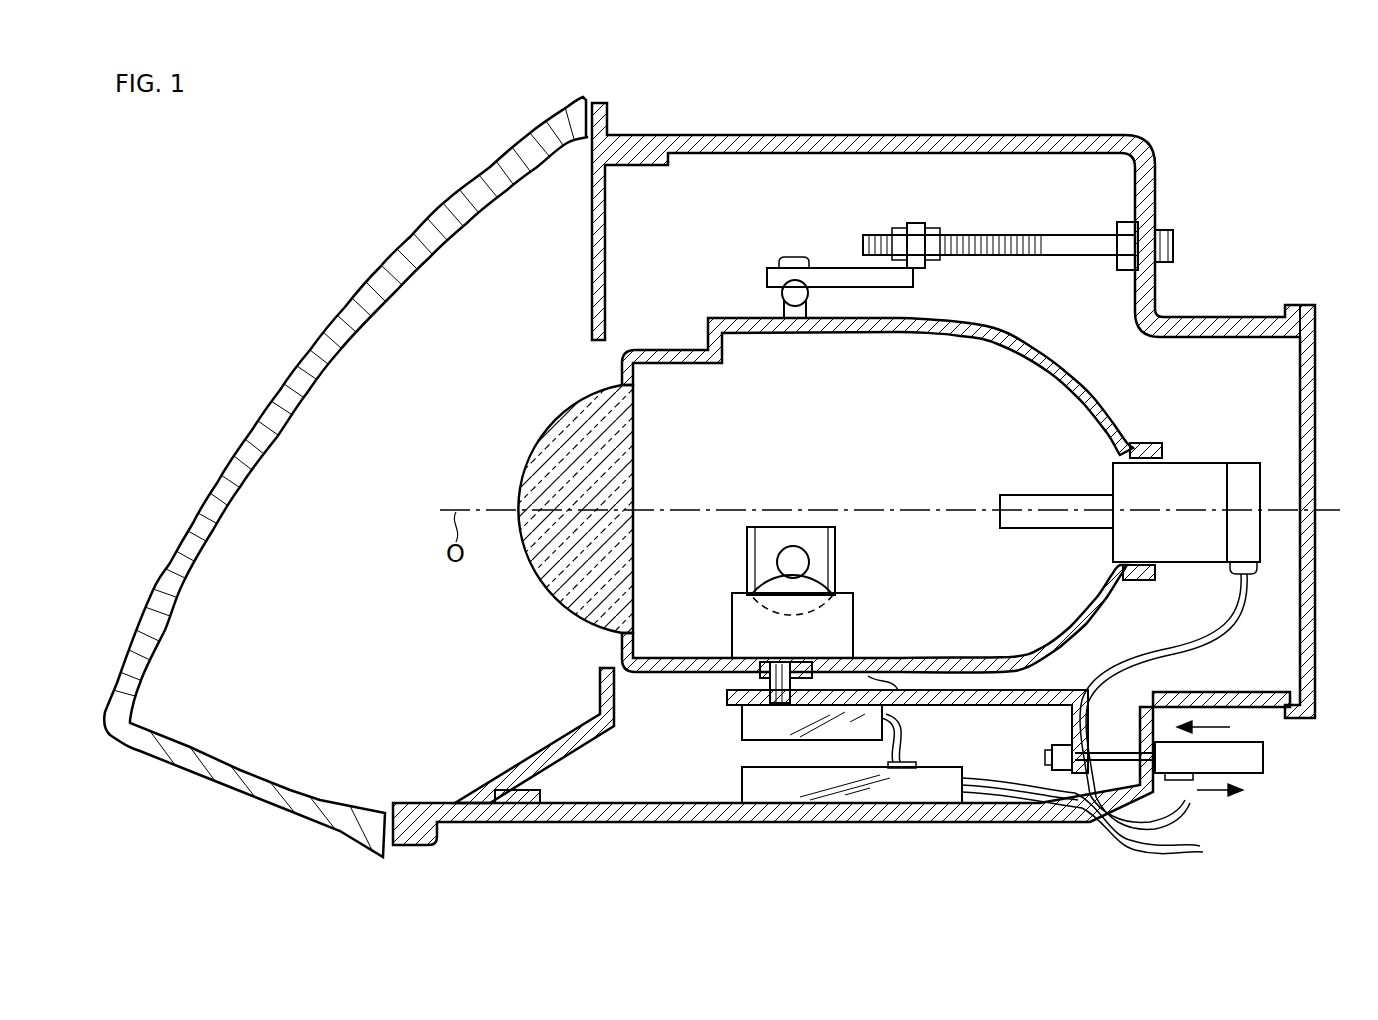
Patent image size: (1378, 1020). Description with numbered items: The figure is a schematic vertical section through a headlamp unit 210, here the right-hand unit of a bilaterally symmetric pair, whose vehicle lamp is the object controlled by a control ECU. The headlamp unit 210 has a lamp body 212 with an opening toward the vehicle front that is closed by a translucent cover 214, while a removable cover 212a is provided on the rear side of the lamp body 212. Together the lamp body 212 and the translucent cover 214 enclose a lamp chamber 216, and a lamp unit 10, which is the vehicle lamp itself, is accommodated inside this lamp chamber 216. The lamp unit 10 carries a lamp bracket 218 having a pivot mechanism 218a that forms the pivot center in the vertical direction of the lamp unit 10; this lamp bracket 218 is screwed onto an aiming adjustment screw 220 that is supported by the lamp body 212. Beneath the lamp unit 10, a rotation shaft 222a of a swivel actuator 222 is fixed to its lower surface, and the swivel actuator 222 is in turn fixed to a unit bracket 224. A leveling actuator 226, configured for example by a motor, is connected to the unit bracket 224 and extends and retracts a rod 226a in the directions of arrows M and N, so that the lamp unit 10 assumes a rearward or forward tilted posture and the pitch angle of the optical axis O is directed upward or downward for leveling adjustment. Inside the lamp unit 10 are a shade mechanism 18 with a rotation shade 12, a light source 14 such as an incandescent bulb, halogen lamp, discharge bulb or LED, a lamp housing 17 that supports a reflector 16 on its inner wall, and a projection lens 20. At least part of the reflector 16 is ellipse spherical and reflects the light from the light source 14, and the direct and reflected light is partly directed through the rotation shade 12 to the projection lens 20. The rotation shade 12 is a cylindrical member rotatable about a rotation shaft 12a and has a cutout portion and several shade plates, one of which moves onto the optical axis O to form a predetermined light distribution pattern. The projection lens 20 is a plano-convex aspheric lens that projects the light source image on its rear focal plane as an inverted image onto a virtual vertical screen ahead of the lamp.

The headlamp unit 210 is at (1023, 135).
The lamp body 212 is at (822, 135).
The removable cover 212a is at (1302, 303).
The translucent cover 214 is at (409, 249).
The lamp chamber 216 is at (540, 292).
The lamp bracket 218 is at (848, 278).
The pivot mechanism 218a is at (790, 290).
The aiming adjustment screw 220 is at (1070, 243).
The lamp unit 10 is at (677, 348).
The rotation shade 12 is at (808, 518).
The rotation shaft 12a is at (800, 562).
The light source 14 is at (1048, 503).
The reflector 16 is at (962, 338).
The lamp housing 17 is at (1055, 362).
The shade mechanism 18 is at (790, 505).
The projection lens 20 is at (550, 428).
The swivel actuator 222 is at (743, 722).
The rotation shaft 222a is at (773, 684).
The unit bracket 224 is at (947, 702).
The leveling actuator 226 is at (1253, 758).
The rod 226a is at (1113, 755).